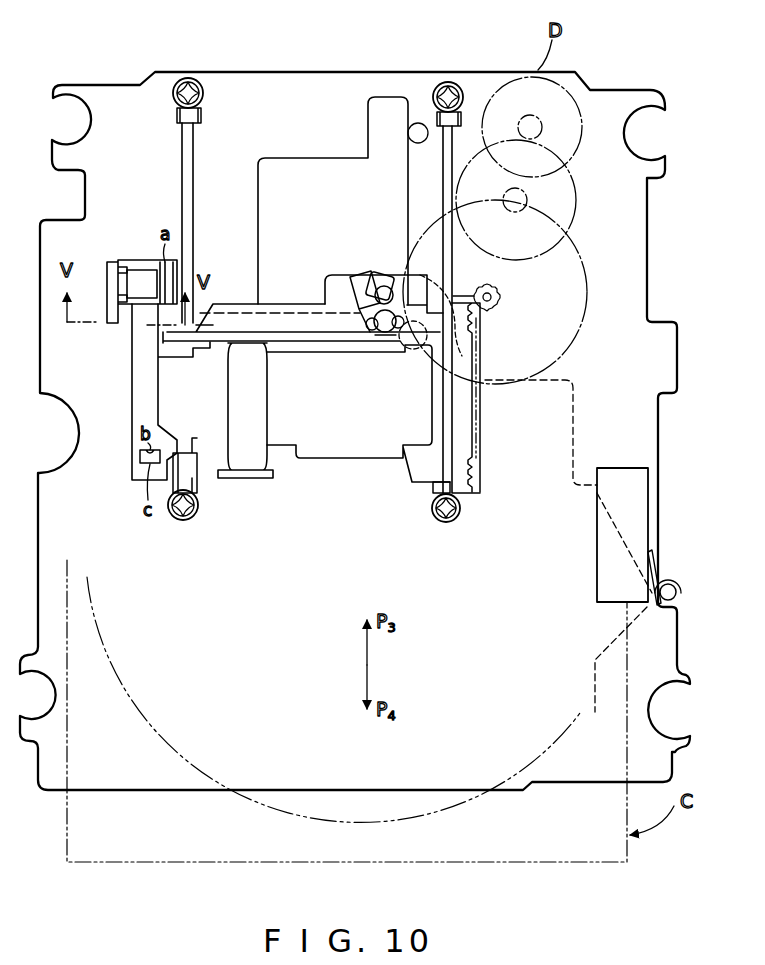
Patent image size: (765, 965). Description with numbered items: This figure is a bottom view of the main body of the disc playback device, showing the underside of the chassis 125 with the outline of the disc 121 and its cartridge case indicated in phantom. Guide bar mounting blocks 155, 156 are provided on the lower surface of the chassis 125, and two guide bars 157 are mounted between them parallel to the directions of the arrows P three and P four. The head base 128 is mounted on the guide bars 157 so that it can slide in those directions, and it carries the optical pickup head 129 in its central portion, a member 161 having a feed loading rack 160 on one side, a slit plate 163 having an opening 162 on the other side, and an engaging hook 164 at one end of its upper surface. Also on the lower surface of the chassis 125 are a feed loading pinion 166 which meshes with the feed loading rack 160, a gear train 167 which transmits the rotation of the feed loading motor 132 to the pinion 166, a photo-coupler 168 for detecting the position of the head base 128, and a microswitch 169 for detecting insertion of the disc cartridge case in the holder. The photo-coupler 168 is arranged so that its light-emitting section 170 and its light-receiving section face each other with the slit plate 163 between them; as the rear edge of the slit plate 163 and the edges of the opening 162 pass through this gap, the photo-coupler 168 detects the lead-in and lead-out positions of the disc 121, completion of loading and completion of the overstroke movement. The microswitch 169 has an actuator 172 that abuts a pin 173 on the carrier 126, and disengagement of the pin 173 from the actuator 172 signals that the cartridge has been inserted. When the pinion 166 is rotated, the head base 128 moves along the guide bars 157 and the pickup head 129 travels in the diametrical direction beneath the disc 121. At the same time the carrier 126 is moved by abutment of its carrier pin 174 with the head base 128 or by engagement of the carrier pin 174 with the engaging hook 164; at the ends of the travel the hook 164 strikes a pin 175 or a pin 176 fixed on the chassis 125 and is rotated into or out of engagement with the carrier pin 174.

The disc 121 is at (238, 799).
The chassis 125 is at (660, 433).
The carrier 126 is at (326, 288).
The head base 128 is at (222, 302).
The optical pickup head 129 is at (350, 462).
The feed loading motor 132 is at (577, 94).
The guide bar mounting blocks 155 is at (201, 118).
The guide bar mounting blocks 156 is at (198, 490).
The guide bars 157 is at (181, 176).
The feed loading rack 160 is at (478, 446).
The member 161 is at (462, 472).
The opening 162 is at (138, 458).
The slit plate 163 is at (138, 387).
The engaging hook 164 is at (353, 272).
The feed loading pinion 166 is at (500, 301).
The gear train 167 is at (571, 249).
The photo-coupler 168 is at (128, 263).
The microswitch 169 is at (597, 585).
The light-emitting section 170 is at (140, 272).
The actuator 172 is at (661, 573).
The pin 173 is at (676, 595).
The carrier pin 174 is at (382, 278).
The pin 175 is at (410, 140).
The pin 176 is at (412, 352).